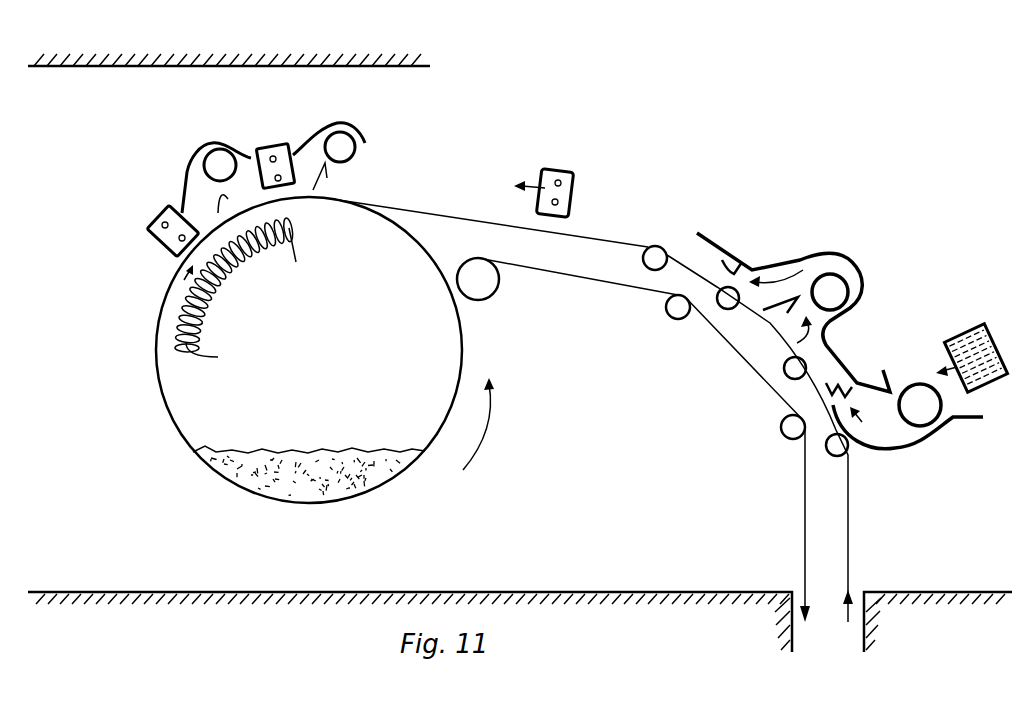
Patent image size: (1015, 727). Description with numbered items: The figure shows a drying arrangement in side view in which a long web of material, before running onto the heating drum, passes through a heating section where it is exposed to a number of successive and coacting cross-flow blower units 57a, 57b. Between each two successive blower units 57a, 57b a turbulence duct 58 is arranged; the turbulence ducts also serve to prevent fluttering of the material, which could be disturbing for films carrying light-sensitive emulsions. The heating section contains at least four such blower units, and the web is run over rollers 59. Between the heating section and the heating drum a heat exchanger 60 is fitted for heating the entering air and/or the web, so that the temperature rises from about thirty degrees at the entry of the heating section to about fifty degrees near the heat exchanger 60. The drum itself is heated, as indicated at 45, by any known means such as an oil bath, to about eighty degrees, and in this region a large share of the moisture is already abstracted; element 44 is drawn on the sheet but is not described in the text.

The feed block 44 is at (158, 238).
The heating means of the drum 45 is at (185, 328).
The heat exchanger 60 is at (555, 170).
The cross-flow blower unit 57b is at (813, 267).
The turbulence duct 58 is at (830, 357).
The cross-flow blower unit 57a is at (910, 452).
The rollers 59 is at (840, 453).